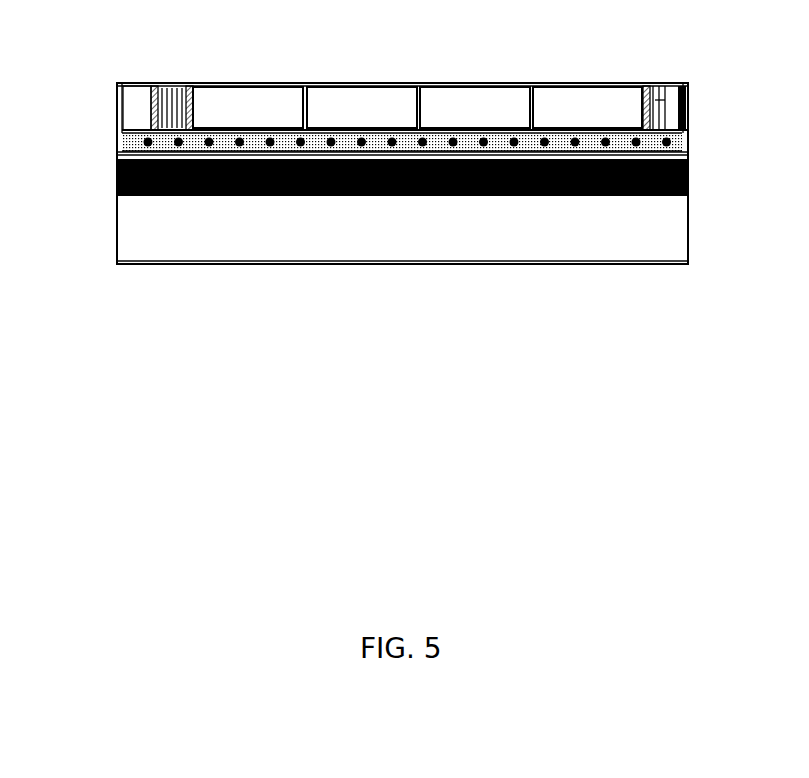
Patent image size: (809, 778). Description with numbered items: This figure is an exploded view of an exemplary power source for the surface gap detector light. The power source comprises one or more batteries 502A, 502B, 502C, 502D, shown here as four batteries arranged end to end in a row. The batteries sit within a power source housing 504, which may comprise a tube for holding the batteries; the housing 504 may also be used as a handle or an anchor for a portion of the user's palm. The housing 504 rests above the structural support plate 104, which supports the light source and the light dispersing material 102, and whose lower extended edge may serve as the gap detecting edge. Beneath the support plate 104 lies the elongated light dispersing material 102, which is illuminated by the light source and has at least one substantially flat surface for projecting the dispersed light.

The light dispersing material 102 is at (378, 255).
The structural support plate 104 is at (692, 173).
The power source housing 504 is at (134, 107).
The battery 502A is at (257, 84).
The battery 502B is at (359, 84).
The battery 502C is at (475, 84).
The battery 502D is at (590, 84).